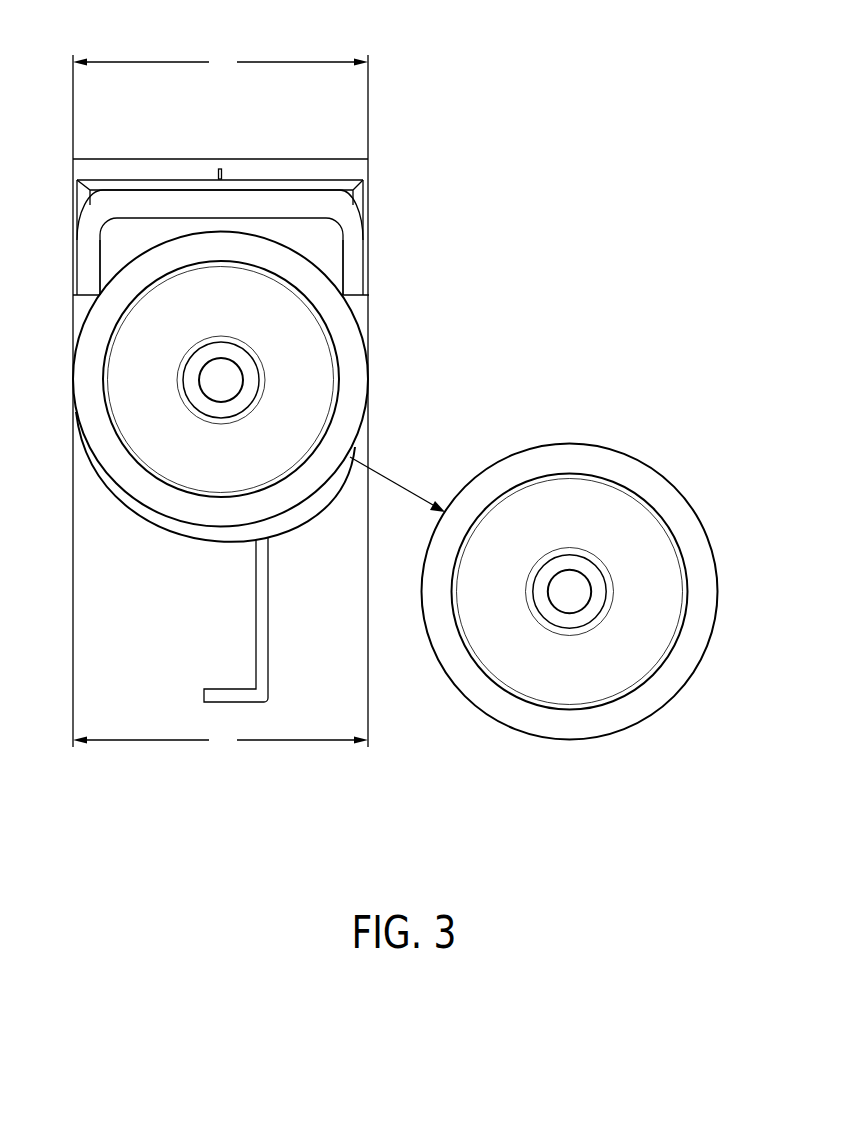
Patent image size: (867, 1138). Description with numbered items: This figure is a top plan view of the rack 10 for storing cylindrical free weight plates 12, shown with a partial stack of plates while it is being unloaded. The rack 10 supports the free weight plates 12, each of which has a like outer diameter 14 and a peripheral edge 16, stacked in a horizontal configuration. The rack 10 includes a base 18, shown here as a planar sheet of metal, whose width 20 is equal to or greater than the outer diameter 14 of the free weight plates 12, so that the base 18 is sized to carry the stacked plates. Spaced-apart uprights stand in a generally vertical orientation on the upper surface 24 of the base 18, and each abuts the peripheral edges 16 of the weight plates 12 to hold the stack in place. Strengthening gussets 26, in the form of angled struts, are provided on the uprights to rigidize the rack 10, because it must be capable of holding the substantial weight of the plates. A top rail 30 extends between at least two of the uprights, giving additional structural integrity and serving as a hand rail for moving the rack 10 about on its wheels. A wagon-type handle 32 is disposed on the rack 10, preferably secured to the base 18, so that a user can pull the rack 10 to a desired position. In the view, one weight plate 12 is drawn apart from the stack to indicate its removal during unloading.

The rack 10 is at (444, 65).
The free weight plates 12 is at (355, 378).
The outer diameter 14 is at (220, 740).
The peripheral edge 16 is at (115, 277).
The base 18 is at (325, 247).
The width 20 is at (220, 104).
The upper surface 24 is at (117, 249).
The strengthening gussets 26 is at (362, 192).
The top rail 30 is at (227, 207).
The handle 32 is at (263, 618).